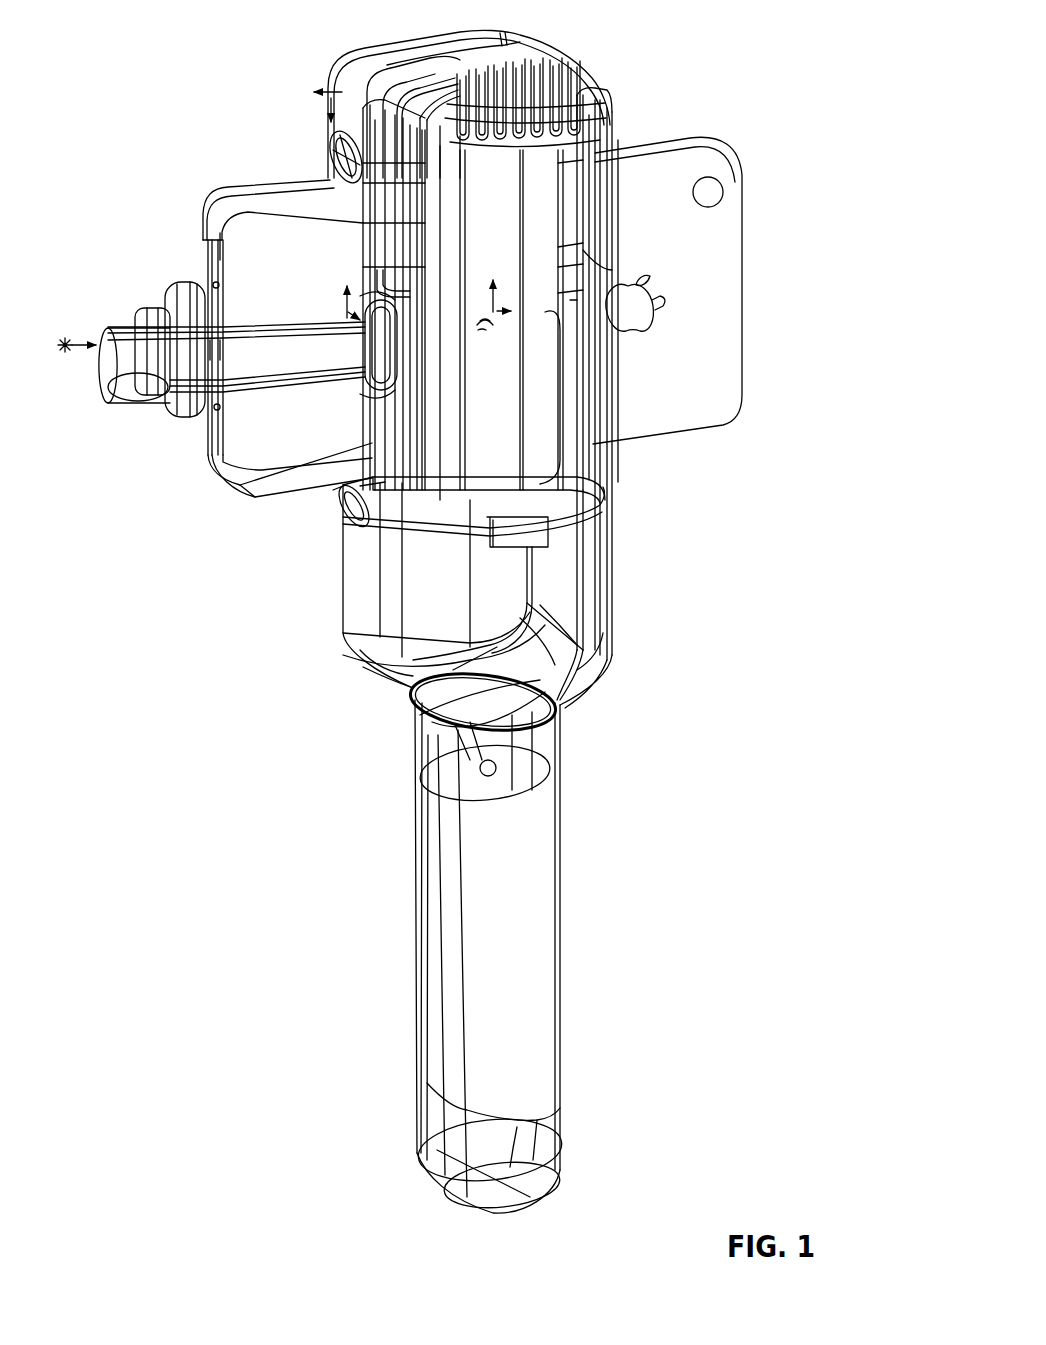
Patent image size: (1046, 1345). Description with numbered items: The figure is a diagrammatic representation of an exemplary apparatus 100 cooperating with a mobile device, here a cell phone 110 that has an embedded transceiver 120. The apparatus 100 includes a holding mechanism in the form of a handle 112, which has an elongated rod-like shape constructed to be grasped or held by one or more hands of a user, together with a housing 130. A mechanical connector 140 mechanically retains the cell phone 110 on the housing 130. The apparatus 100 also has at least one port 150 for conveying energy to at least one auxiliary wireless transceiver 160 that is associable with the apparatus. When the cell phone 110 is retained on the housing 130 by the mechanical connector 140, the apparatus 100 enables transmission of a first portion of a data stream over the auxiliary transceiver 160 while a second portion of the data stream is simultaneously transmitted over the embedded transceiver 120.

The apparatus 100 is at (240, 692).
The cell phone 110 is at (752, 150).
The handle 112 is at (411, 1024).
The embedded transceiver 120 is at (615, 366).
The housing 130 is at (616, 594).
The mechanical connector 140 is at (326, 183).
The port 150 is at (507, 757).
The auxiliary wireless transceiver 160 is at (410, 95).